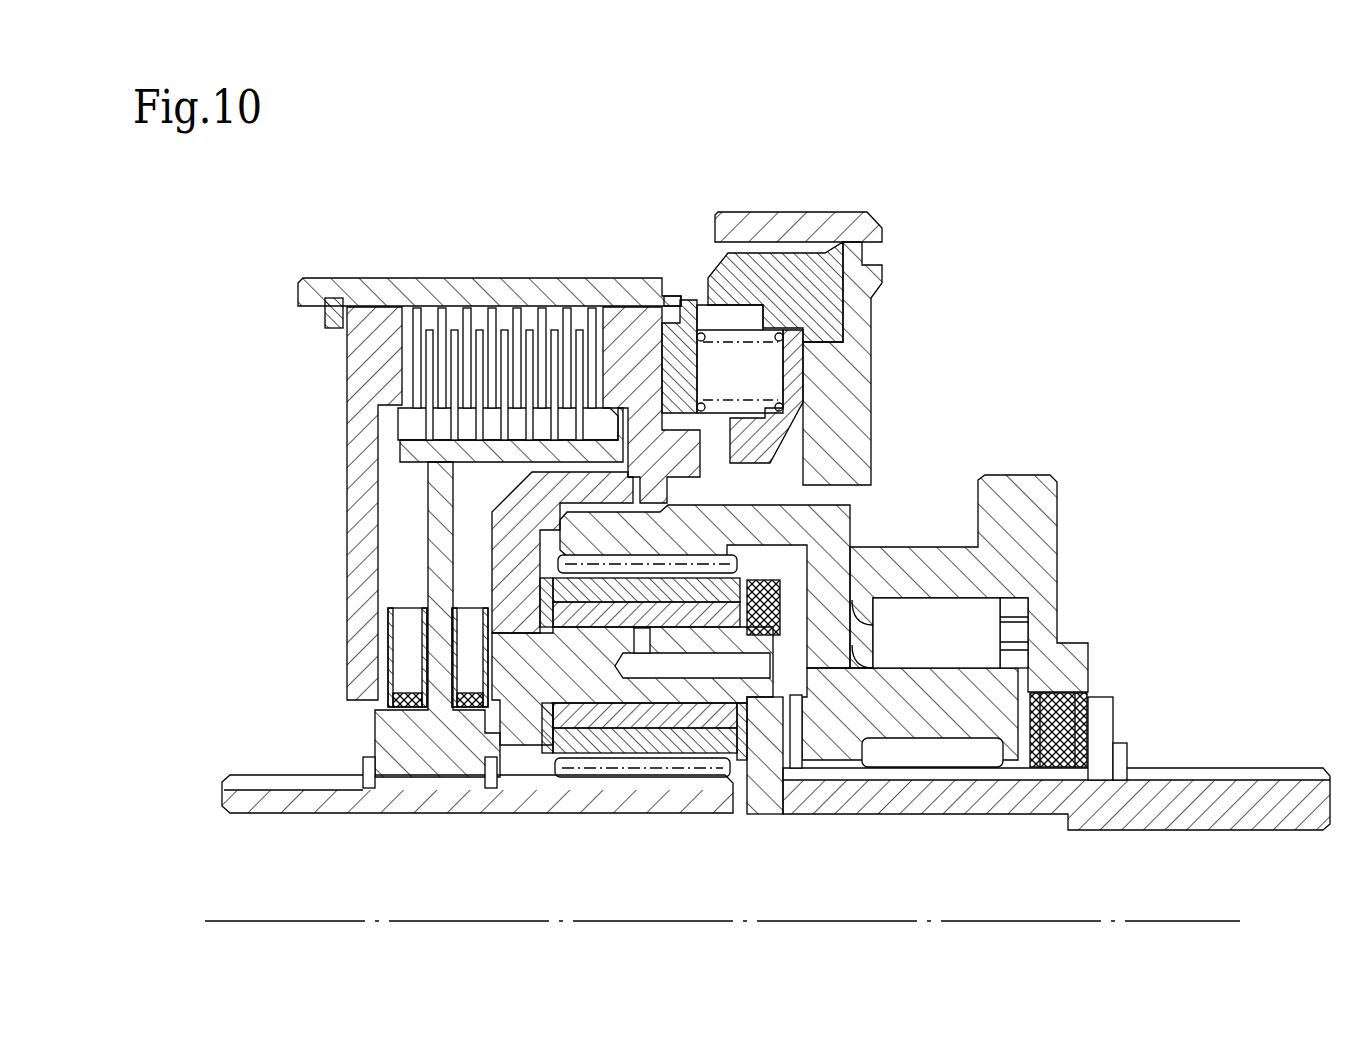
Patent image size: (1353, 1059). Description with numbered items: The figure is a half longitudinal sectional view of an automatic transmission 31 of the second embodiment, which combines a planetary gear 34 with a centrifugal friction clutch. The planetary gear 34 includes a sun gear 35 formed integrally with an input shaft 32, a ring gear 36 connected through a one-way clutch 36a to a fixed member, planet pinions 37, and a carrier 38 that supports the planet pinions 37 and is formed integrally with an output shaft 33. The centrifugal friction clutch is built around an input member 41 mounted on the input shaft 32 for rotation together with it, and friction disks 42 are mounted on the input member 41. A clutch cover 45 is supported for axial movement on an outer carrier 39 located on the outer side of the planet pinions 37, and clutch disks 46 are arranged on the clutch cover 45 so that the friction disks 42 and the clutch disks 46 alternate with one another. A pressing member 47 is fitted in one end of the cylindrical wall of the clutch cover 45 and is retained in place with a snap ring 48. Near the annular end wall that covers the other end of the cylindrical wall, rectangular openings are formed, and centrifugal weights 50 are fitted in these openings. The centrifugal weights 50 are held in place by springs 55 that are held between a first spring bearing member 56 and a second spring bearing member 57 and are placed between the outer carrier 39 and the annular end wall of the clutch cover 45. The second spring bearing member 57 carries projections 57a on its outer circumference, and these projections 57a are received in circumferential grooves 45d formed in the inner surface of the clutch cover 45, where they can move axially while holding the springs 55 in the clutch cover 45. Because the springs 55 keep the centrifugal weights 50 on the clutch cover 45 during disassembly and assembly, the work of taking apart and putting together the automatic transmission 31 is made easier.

The automatic transmission 31 is at (763, 128).
The input shaft 32 is at (275, 780).
The output shaft 33 is at (1222, 785).
The planetary gear 34 is at (847, 532).
The sun gear 35 is at (653, 776).
The ring gear 36 is at (710, 508).
The one-way clutch 36a is at (960, 643).
The planet pinions 37 is at (737, 576).
The carrier 38 is at (768, 740).
The outer carrier 39 is at (515, 490).
The input member 41 is at (428, 528).
The friction disks 42 is at (480, 332).
The clutch cover 45 is at (510, 278).
The circumferential grooves 45d is at (668, 293).
The clutch disks 46 is at (567, 310).
The pressing member 47 is at (347, 452).
The snap ring 48 is at (330, 322).
The centrifugal weights 50 is at (785, 273).
The springs 55 is at (713, 265).
The first spring bearing member 56 is at (880, 372).
The second spring bearing member 57 is at (685, 372).
The projections 57a is at (690, 303).